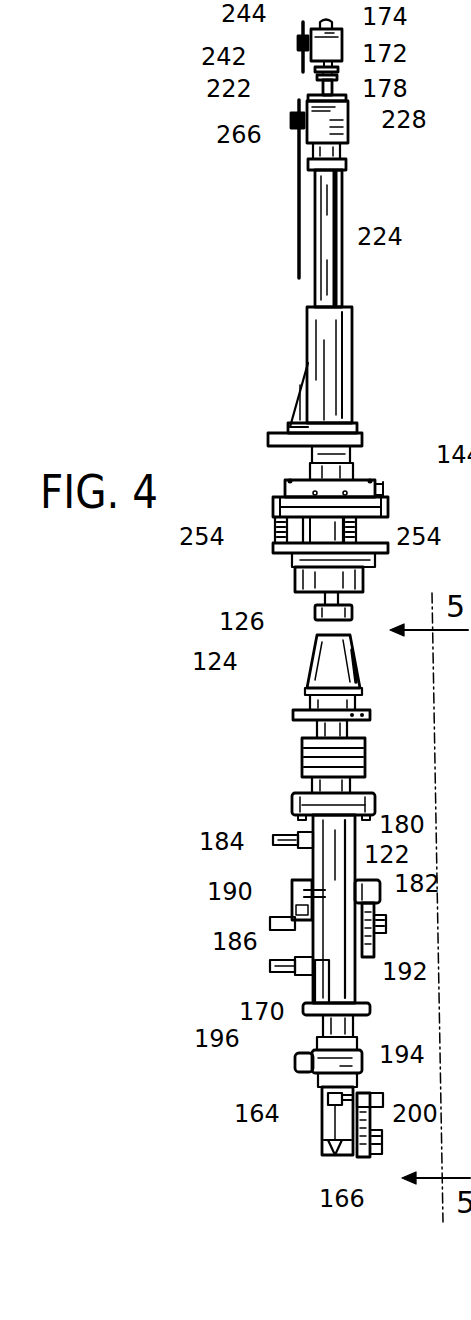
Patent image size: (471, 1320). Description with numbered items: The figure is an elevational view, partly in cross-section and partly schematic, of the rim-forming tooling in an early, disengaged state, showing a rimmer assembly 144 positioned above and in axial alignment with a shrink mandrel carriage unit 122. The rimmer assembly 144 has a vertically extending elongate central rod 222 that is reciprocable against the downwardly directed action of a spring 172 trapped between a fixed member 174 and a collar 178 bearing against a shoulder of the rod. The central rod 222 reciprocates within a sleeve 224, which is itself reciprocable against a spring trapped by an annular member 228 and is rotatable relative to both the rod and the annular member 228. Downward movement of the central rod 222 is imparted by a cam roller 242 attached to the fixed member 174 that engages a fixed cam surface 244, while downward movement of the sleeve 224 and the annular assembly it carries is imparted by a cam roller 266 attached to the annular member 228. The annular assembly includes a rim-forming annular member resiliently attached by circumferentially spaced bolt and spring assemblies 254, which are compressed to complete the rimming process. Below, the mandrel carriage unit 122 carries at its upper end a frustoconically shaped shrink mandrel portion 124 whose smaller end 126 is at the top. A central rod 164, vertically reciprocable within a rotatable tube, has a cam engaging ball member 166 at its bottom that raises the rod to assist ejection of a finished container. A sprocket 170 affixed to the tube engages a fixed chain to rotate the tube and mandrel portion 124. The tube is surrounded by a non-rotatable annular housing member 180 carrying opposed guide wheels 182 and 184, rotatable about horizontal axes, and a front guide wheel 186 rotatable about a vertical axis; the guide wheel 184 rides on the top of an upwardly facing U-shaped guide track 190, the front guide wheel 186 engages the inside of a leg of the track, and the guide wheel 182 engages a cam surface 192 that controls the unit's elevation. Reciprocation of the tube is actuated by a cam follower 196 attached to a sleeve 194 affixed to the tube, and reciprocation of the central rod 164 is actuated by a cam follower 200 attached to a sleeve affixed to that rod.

The shrink mandrel carriage unit 122 is at (355, 858).
The shrink mandrel portion 124 is at (313, 653).
The smaller end 126 is at (322, 632).
The rimmer assembly 144 is at (397, 474).
The central rod 164 is at (325, 1135).
The cam engaging ball member 166 is at (337, 1155).
The sprocket 170 is at (312, 1011).
The spring 172 is at (333, 72).
The fixed member 174 is at (341, 30).
The collar 178 is at (337, 78).
The annular housing member 180 is at (355, 837).
The guide wheel 182 is at (380, 890).
The guide wheel 184 is at (292, 902).
The front guide wheel 186 is at (312, 932).
The U-shaped guide track 190 is at (293, 907).
The cam surface 192 is at (372, 940).
The sleeve 194 is at (362, 1060).
The cam follower 196 is at (295, 1062).
The cam follower 200 is at (372, 1103).
The central rod 222 is at (323, 82).
The sleeve 224 is at (342, 282).
The annular member 228 is at (348, 112).
The cam roller 242 is at (299, 43).
The cam surface 244 is at (302, 24).
The bolt and spring assemblies 254 is at (222, 537).
The cam roller 266 is at (291, 122).